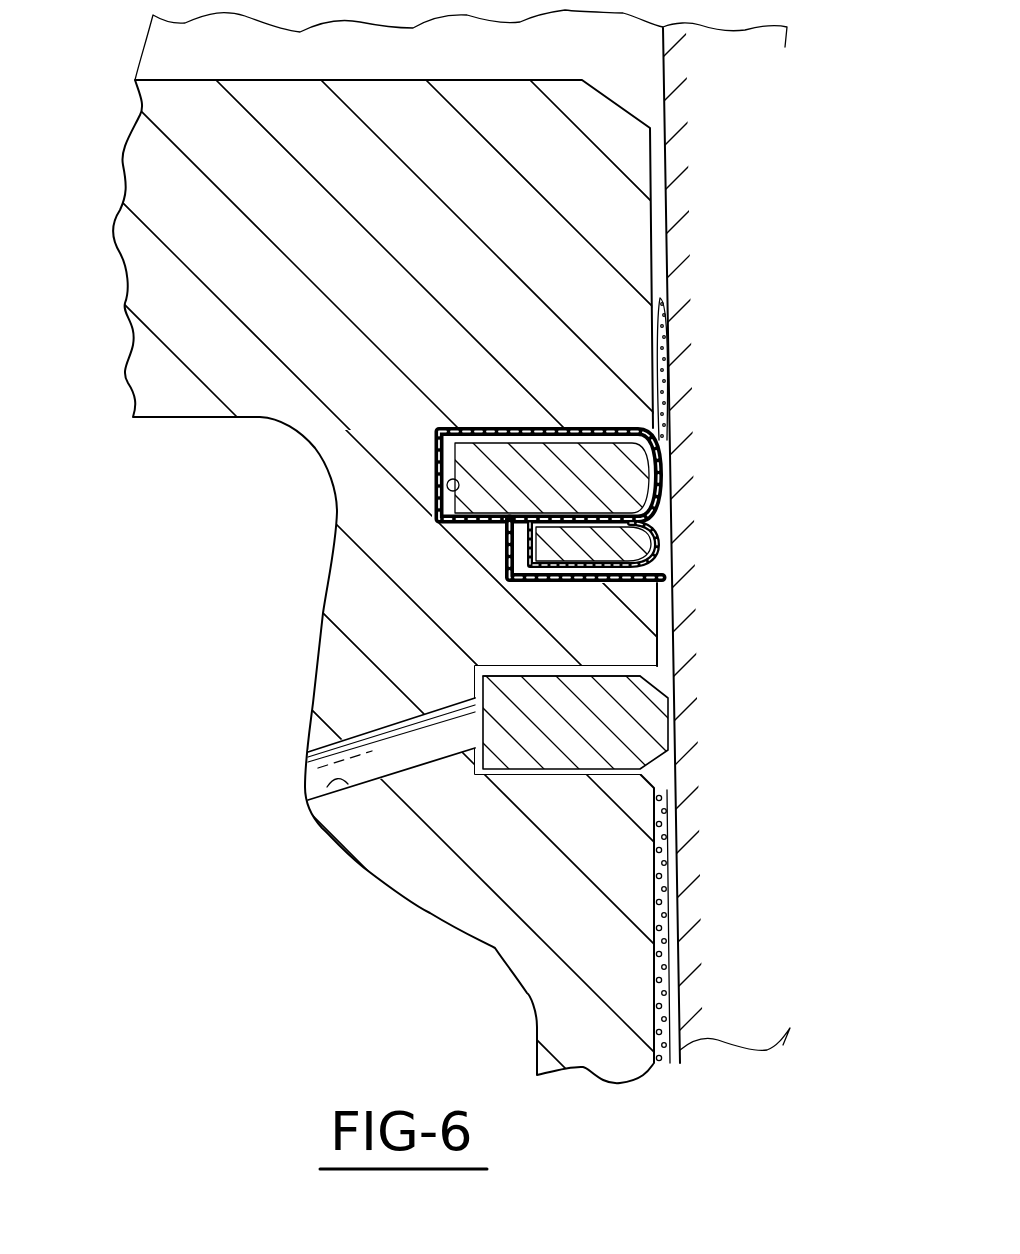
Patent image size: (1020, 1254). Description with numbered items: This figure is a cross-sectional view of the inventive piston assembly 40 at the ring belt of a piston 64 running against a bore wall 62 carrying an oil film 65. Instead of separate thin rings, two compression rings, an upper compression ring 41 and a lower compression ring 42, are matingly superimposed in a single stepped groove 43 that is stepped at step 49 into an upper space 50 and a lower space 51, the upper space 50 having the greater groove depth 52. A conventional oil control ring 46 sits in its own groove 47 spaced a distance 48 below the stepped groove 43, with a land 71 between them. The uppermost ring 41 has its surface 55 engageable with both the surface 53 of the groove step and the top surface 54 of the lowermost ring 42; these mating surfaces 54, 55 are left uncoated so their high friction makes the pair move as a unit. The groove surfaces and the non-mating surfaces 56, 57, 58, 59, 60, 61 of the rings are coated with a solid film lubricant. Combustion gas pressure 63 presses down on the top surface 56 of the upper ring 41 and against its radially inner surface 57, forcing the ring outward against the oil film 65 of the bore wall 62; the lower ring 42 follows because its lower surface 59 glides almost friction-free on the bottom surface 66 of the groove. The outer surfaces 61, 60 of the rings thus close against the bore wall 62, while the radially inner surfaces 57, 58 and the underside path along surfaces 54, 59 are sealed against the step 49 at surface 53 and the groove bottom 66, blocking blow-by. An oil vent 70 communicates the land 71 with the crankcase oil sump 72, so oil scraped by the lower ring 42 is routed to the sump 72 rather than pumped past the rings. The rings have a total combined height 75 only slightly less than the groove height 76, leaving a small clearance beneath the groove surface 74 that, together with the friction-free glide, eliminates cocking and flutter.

The piston assembly 40 is at (720, 284).
The upper compression ring 41 is at (672, 462).
The lower compression ring 42 is at (667, 549).
The stepped groove 43 is at (668, 437).
The oil control ring 46 is at (640, 720).
The groove 47 is at (640, 693).
The distance 48 is at (590, 583).
The step 49 is at (452, 539).
The upper space 50 is at (440, 461).
The lower space 51 is at (510, 583).
The groove depth 52 is at (433, 426).
The surface of the groove step 53 is at (445, 509).
The top surface of the lowermost ring 54 is at (580, 510).
The surface of the uppermost ring 55 is at (667, 531).
The top surface of the upper compression ring 56 is at (624, 445).
The radially inner surface of the upper ring 57 is at (476, 474).
The radially inner surface of the lower ring 58 is at (505, 553).
The lower surface of the lower compression ring 59 is at (622, 585).
The outer circumferential surface of the lower ring 60 is at (668, 560).
The outer circumferential surface of the upper ring 61 is at (648, 480).
The bore wall 62 is at (660, 218).
The combustion gas pressure 63 is at (590, 60).
The piston 64 is at (196, 346).
The oil film 65 is at (665, 347).
The bottom surface of the groove 66 is at (576, 583).
The oil vent 70 is at (308, 790).
The land 71 is at (672, 612).
The crankcase oil sump 72 is at (664, 633).
The groove surface 74 is at (500, 447).
The total combined height 75 is at (505, 582).
The groove height 76 is at (506, 572).